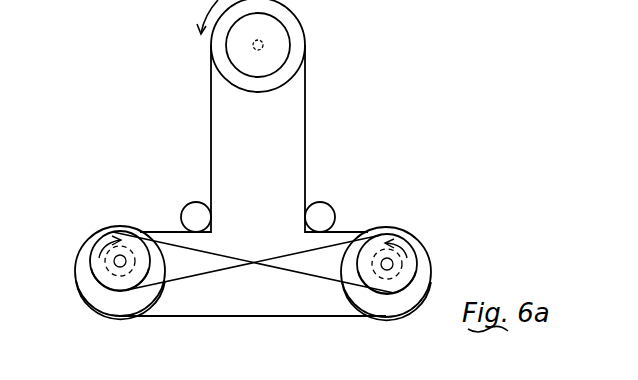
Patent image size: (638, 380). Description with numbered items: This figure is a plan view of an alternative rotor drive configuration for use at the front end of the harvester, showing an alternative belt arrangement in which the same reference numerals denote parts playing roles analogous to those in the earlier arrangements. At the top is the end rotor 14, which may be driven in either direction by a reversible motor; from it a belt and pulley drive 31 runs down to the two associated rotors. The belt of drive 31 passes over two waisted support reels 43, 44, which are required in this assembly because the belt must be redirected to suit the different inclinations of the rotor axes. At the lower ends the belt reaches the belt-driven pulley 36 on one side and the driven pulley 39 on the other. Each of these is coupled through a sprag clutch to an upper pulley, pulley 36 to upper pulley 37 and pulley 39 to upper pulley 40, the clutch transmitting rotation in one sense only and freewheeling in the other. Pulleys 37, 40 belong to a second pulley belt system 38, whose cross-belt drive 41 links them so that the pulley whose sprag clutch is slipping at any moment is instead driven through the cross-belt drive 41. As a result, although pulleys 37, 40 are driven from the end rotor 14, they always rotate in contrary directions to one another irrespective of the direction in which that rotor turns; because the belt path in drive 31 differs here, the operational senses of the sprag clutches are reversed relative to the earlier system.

The end rotor 14 is at (304, 30).
The belt and pulley drive 31 is at (321, 110).
The belt-driven pulley 36 is at (87, 277).
The upper pulley 37 is at (110, 237).
The second pulley belt system 38 is at (281, 294).
The driven pulley 39 is at (421, 253).
The upper pulley 40 is at (410, 271).
The cross-belt drive 41 is at (297, 253).
The waisted support reel 43 is at (188, 207).
The waisted support reel 44 is at (328, 207).